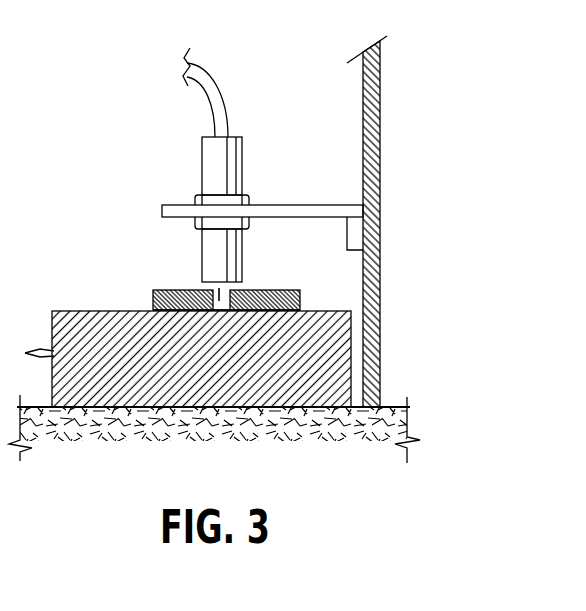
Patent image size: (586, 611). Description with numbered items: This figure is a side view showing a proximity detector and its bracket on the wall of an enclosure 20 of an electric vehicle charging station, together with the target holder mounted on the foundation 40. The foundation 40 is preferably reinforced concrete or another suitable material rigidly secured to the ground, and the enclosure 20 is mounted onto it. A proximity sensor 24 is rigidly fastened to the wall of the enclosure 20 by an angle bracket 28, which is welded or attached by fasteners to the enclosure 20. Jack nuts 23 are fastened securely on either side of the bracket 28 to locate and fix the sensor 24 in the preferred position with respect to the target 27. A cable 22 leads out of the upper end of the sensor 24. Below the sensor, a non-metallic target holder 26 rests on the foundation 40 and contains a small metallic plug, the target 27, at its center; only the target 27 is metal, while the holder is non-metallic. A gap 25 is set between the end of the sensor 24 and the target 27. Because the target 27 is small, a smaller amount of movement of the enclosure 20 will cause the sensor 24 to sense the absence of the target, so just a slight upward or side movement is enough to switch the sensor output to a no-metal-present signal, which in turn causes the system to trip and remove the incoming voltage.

The enclosure 20 is at (383, 86).
The cable 22 is at (212, 92).
The jack nuts 23 is at (196, 230).
The proximity sensor 24 is at (230, 155).
The gap 25 is at (243, 286).
The target holder 26 is at (300, 296).
The target 27 is at (219, 290).
The angle bracket 28 is at (360, 212).
The foundation 40 is at (80, 311).